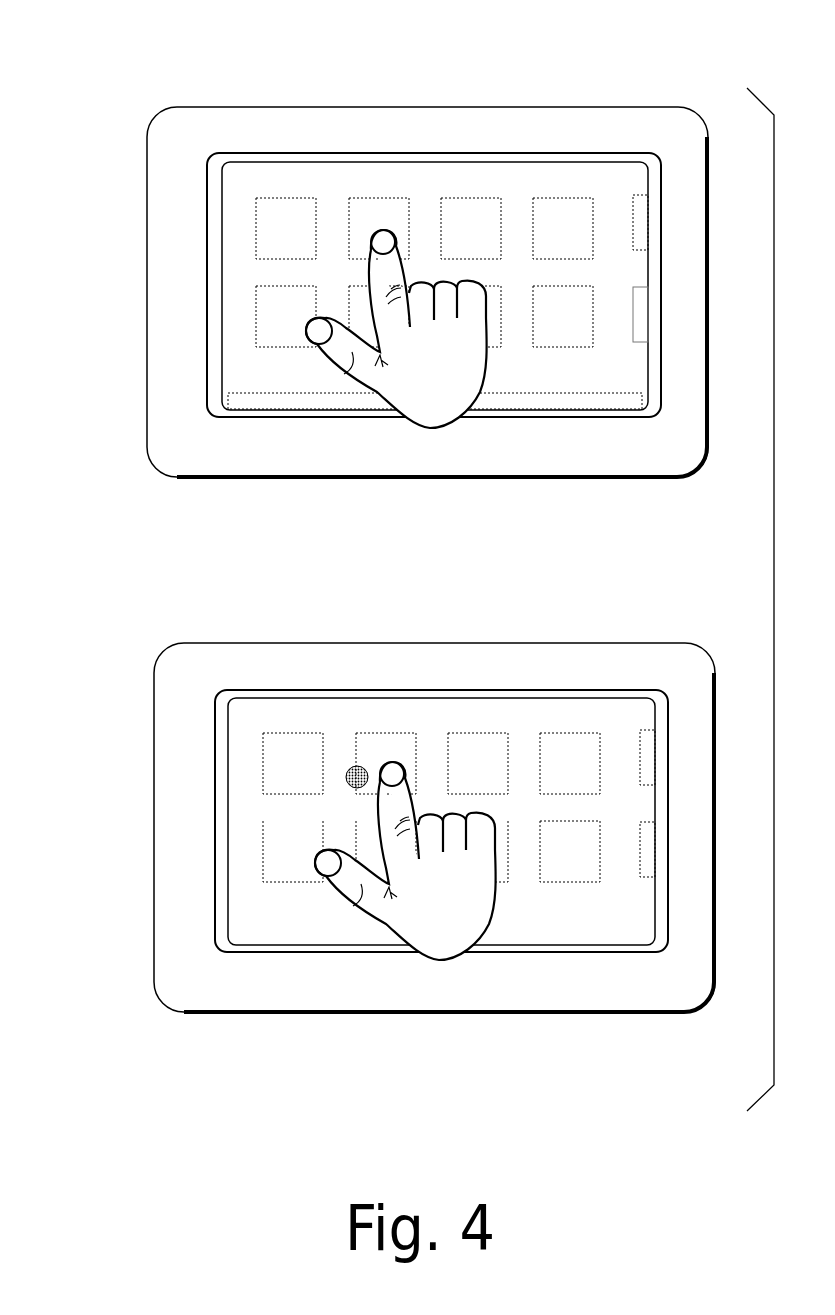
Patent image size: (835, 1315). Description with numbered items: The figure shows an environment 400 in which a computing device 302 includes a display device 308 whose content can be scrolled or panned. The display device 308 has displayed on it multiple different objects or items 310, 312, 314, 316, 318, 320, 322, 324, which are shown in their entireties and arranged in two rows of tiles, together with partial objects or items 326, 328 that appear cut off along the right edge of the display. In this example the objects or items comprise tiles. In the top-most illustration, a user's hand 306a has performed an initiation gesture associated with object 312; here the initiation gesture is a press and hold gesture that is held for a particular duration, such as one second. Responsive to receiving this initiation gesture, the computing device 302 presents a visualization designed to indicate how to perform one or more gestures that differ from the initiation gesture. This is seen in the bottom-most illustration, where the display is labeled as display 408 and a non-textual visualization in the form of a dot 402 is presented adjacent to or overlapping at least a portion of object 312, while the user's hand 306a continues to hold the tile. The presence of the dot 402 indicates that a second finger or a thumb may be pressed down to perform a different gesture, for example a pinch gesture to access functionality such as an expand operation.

The environment 400 is at (145, 64).
The computing device 302 is at (339, 96).
The display device 308 is at (628, 187).
The updated user interface screen 408 is at (634, 721).
The object or item 310 is at (289, 496).
The object or item 312 is at (382, 496).
The object or item 314 is at (474, 496).
The object or item 316 is at (566, 496).
The object or item 318 is at (289, 584).
The object or item 320 is at (382, 584).
The object or item 322 is at (474, 584).
The object or item 324 is at (566, 584).
The partial object or item 326 is at (642, 222).
The partial object or item 328 is at (641, 315).
The user's hand 306a is at (456, 376).
The dot 402 is at (354, 764).